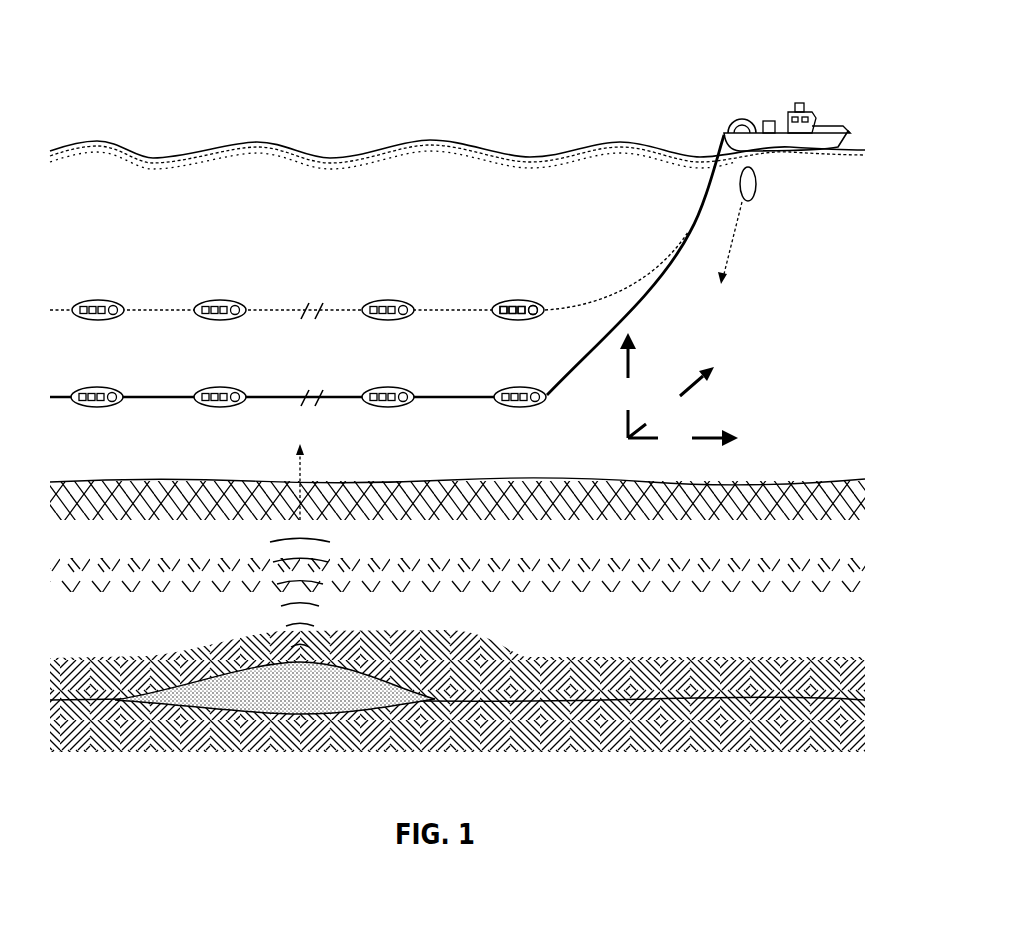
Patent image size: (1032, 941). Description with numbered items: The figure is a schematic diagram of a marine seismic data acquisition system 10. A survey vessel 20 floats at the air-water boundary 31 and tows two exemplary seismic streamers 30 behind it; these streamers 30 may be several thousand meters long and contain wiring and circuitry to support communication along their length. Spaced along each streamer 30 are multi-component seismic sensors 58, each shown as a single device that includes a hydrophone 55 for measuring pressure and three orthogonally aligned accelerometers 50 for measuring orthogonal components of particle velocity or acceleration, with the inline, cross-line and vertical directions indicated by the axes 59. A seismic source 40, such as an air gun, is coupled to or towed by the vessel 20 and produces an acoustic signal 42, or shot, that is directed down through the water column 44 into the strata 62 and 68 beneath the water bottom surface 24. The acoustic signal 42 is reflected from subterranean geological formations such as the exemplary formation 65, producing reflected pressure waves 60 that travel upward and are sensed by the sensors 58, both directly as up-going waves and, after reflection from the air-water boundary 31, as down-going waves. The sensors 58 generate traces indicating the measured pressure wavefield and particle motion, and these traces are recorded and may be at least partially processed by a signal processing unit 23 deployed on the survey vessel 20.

The marine seismic data acquisition system 10 is at (247, 104).
The survey vessel 20 is at (834, 127).
The signal processing unit 23 is at (768, 120).
The water bottom surface 24 is at (747, 478).
The seismic streamer 30 is at (687, 222).
The air-water boundary 31 is at (410, 140).
The seismic source 40 is at (757, 182).
The acoustic signal 42 is at (742, 228).
The water column 44 is at (750, 335).
The accelerometers 50 is at (521, 305).
The hydrophone 55 is at (536, 305).
The multi-component seismic sensor 58 is at (86, 300).
The axes 59 is at (615, 451).
The pressure waves 60 is at (258, 612).
The stratum 62 is at (435, 672).
The subterranean geological formation 65 is at (288, 703).
The stratum 68 is at (435, 745).